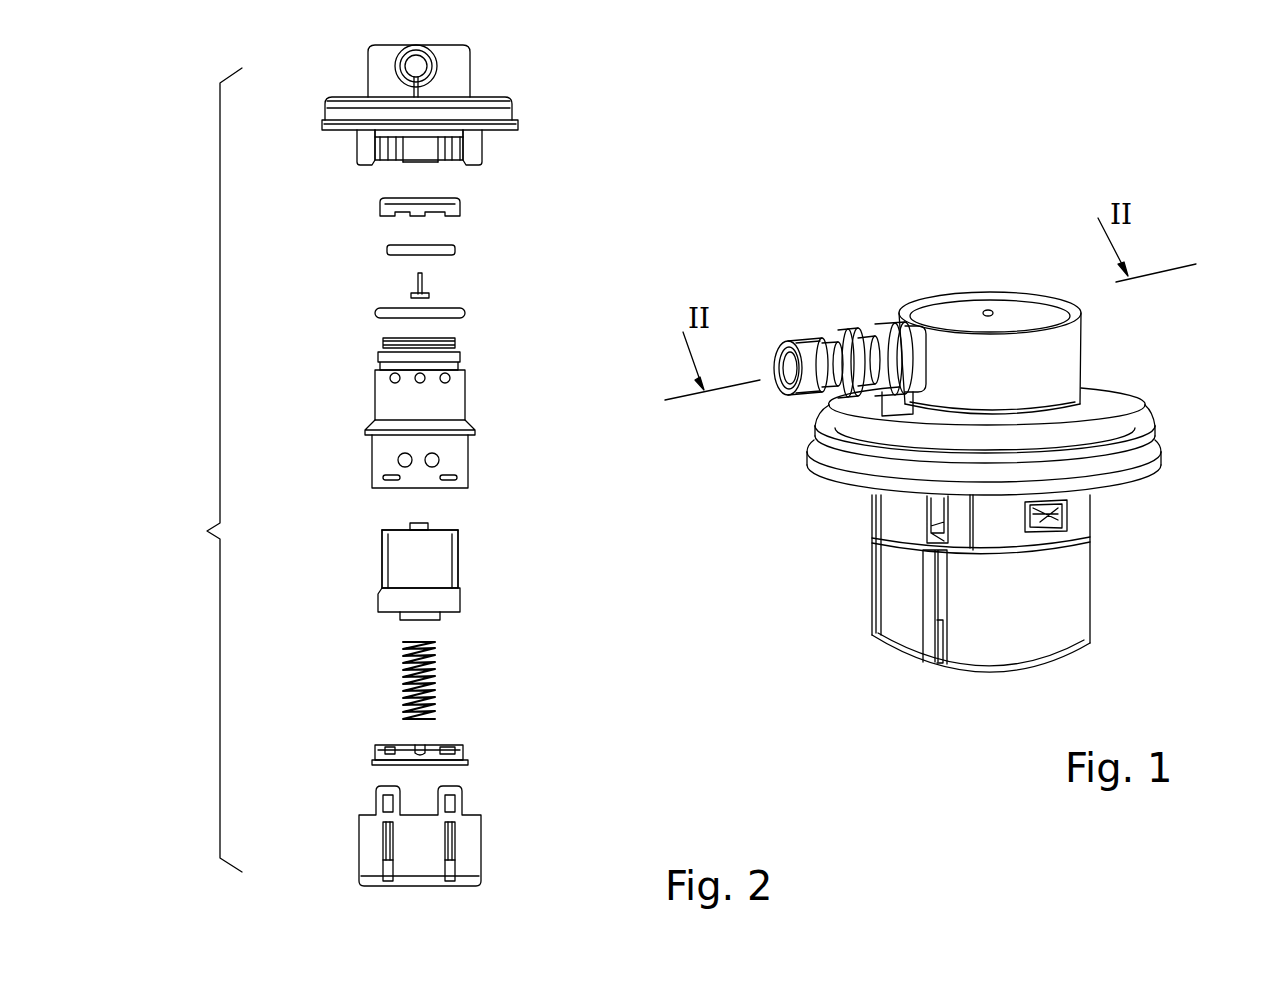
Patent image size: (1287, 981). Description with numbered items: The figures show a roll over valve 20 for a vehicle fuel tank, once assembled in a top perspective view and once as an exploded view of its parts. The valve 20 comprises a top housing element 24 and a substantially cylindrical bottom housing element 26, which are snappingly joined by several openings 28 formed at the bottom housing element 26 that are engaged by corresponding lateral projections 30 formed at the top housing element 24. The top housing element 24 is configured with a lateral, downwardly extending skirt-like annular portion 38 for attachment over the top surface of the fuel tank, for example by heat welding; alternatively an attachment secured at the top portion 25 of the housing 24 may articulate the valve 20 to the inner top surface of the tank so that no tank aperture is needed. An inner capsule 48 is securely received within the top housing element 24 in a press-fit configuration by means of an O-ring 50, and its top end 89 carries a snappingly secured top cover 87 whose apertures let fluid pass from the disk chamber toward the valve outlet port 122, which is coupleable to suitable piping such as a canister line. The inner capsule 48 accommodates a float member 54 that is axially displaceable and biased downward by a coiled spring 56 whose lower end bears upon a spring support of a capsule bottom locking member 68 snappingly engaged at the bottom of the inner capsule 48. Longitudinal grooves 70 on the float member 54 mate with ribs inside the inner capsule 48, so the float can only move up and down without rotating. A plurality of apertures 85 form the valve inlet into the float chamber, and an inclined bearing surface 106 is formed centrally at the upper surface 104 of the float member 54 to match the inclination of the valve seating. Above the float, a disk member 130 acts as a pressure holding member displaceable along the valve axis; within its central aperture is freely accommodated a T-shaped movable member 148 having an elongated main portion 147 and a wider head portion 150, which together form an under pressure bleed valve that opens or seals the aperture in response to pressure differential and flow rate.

In FIG. 2, the roll over valve 20 is at (207, 531).
In FIG. 1, the roll over valve 20 is at (1113, 632).
In FIG. 2, the top housing element 24 is at (513, 100).
In FIG. 1, the top housing element 24 is at (1143, 418).
In FIG. 1, the top portion 25 is at (1088, 357).
In FIG. 2, the bottom housing element 26 is at (472, 842).
In FIG. 1, the bottom housing element 26 is at (1092, 570).
In FIG. 2, the openings 28 is at (450, 805).
In FIG. 1, the openings 28 is at (930, 538).
In FIG. 2, the lateral projections 30 is at (452, 164).
In FIG. 2, the skirt-like annular portion 38 is at (322, 130).
In FIG. 1, the skirt-like annular portion 38 is at (1164, 472).
In FIG. 2, the inner capsule 48 is at (455, 402).
In FIG. 2, the O-ring 50 is at (373, 314).
In FIG. 2, the float member 54 is at (445, 574).
In FIG. 2, the coiled spring 56 is at (437, 676).
In FIG. 2, the capsule bottom locking member 68 is at (465, 755).
In FIG. 2, the longitudinal grooves 70 is at (460, 560).
In FIG. 2, the apertures 85 is at (392, 875).
In FIG. 1, the apertures 85 is at (940, 665).
In FIG. 2, the top cover 87 is at (378, 207).
In FIG. 2, the top end 89 is at (381, 341).
In FIG. 2, the upper surface 104 is at (385, 532).
In FIG. 2, the inclined bearing surface 106 is at (430, 522).
In FIG. 2, the valve outlet port 122 is at (437, 72).
In FIG. 1, the valve outlet port 122 is at (784, 352).
In FIG. 2, the disk member 130 is at (455, 248).
In FIG. 2, the main portion 147 is at (425, 285).
In FIG. 2, the movable member 148 is at (410, 282).
In FIG. 2, the head portion 150 is at (430, 297).